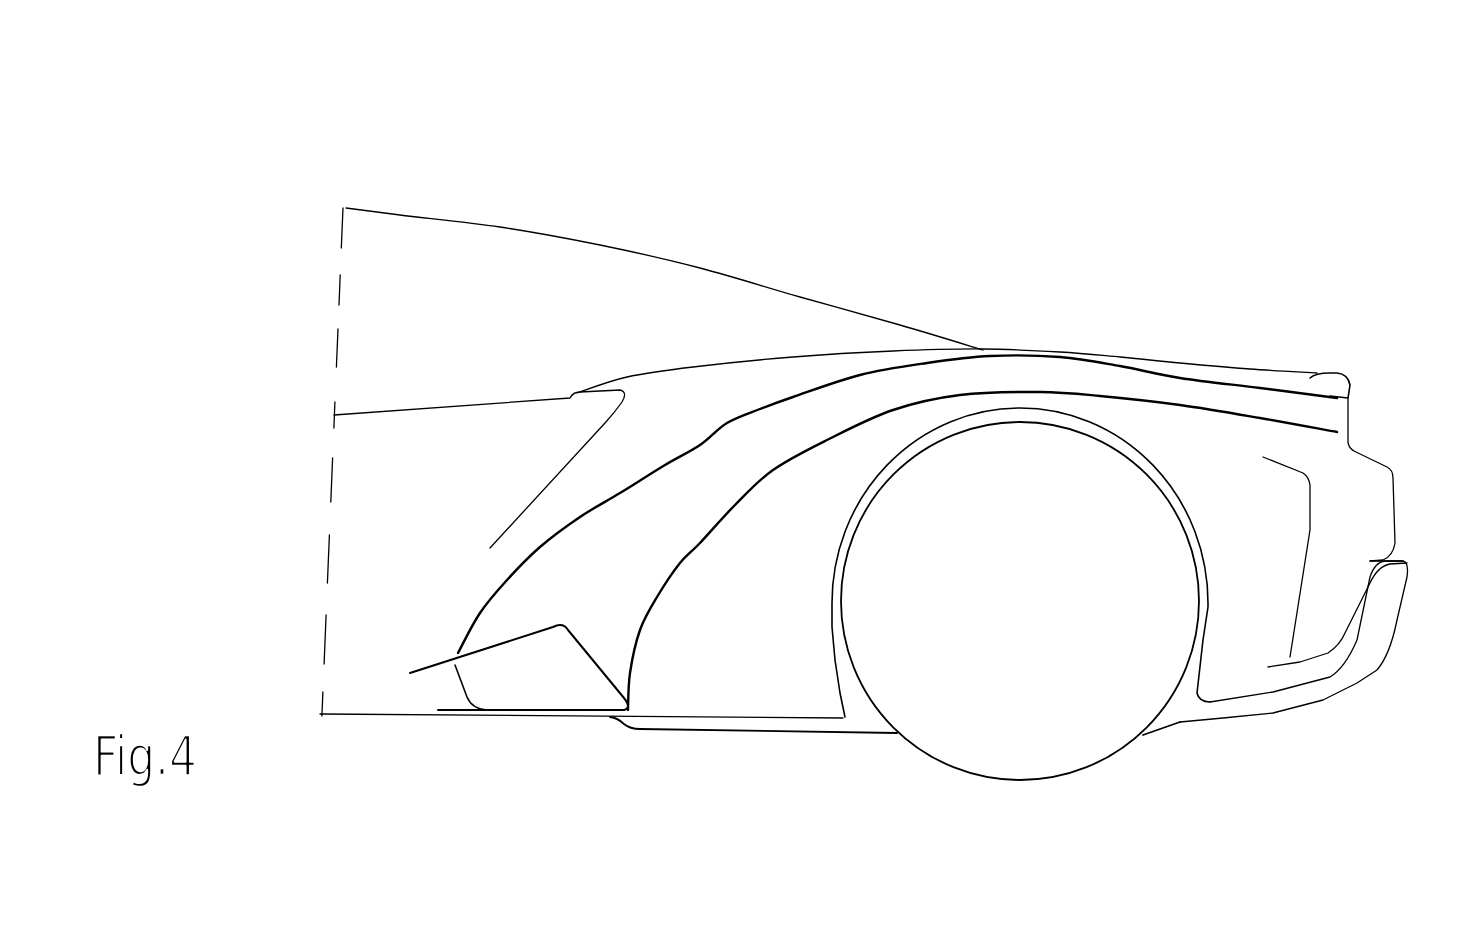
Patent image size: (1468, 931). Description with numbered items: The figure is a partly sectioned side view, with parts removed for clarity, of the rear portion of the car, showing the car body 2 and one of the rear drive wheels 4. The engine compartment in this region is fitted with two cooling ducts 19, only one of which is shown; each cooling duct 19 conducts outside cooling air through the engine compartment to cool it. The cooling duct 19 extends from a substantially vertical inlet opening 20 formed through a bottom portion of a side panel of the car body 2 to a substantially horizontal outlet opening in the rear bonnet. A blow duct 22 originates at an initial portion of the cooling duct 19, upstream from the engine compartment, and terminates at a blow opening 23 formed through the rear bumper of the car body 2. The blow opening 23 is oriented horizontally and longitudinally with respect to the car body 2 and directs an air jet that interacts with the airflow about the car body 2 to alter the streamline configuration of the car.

The car body 2 is at (707, 216).
The rear drive wheel 4 is at (1103, 745).
The cooling duct 19 is at (543, 671).
The inlet opening 20 is at (511, 727).
The blow duct 22 is at (997, 373).
The blow opening 23 is at (1352, 413).